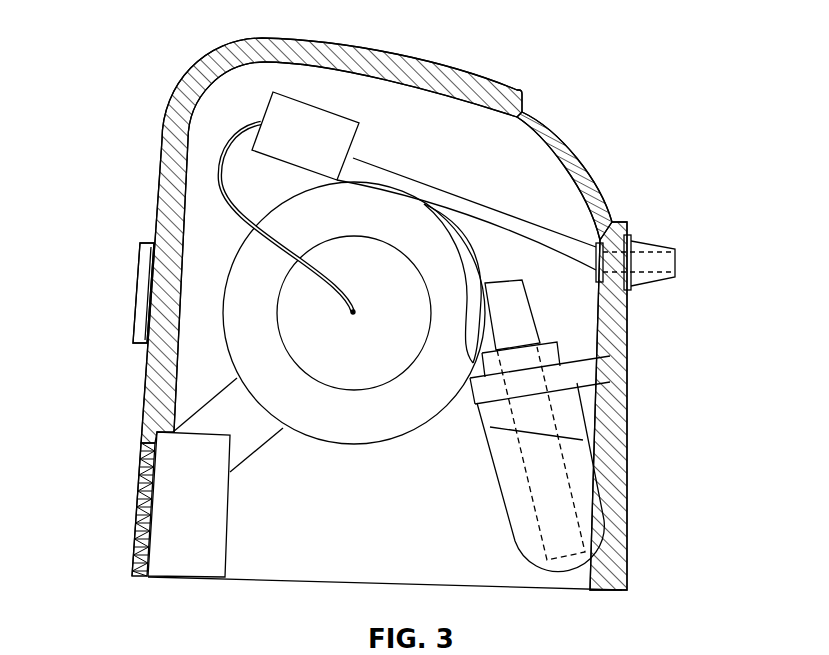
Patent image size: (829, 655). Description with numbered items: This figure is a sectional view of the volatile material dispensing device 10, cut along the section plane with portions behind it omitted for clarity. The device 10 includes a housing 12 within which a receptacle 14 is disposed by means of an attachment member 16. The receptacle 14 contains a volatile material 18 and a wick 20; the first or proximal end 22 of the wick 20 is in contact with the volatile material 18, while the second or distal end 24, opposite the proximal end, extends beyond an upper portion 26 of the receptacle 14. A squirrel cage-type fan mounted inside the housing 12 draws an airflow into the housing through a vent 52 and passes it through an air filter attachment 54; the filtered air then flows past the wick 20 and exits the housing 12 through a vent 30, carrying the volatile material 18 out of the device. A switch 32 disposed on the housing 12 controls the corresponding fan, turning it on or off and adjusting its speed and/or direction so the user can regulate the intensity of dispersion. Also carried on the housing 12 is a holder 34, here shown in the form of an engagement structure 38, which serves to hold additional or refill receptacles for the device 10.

The device 10 is at (120, 36).
The housing 12 is at (372, 62).
The receptacle 14 is at (567, 400).
The attachment member 16 is at (603, 373).
The volatile material 18 is at (545, 410).
The wick 20 is at (578, 457).
The first or proximal end 22 is at (555, 513).
The second or distal end 24 is at (517, 313).
The upper portion 26 is at (518, 362).
The vent 30 is at (558, 142).
The switch 32 is at (663, 244).
The holder 34 is at (130, 283).
The engagement structure 38 is at (140, 322).
The vent 52 is at (136, 518).
The air filter attachment 54 is at (171, 570).